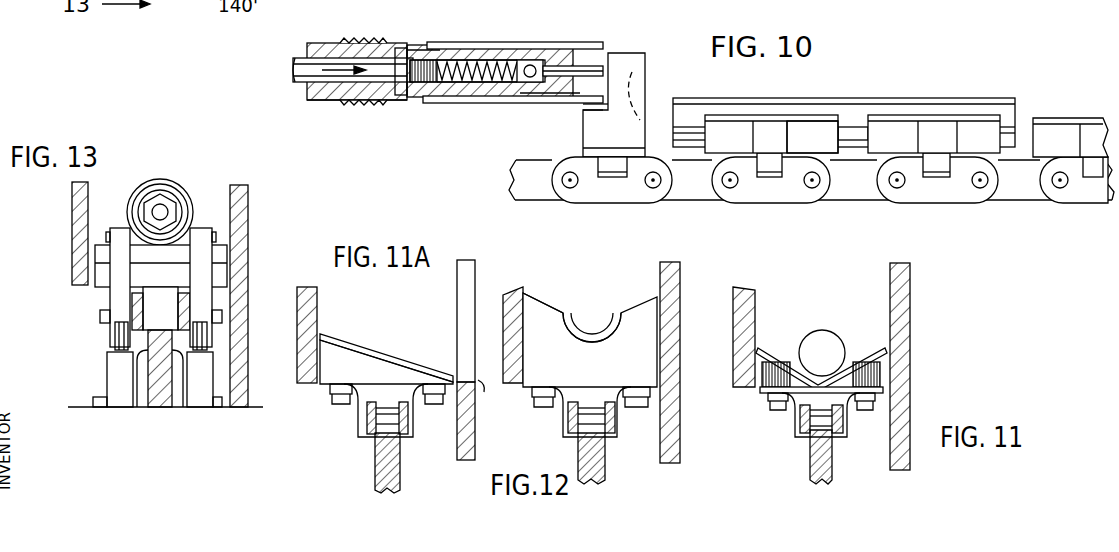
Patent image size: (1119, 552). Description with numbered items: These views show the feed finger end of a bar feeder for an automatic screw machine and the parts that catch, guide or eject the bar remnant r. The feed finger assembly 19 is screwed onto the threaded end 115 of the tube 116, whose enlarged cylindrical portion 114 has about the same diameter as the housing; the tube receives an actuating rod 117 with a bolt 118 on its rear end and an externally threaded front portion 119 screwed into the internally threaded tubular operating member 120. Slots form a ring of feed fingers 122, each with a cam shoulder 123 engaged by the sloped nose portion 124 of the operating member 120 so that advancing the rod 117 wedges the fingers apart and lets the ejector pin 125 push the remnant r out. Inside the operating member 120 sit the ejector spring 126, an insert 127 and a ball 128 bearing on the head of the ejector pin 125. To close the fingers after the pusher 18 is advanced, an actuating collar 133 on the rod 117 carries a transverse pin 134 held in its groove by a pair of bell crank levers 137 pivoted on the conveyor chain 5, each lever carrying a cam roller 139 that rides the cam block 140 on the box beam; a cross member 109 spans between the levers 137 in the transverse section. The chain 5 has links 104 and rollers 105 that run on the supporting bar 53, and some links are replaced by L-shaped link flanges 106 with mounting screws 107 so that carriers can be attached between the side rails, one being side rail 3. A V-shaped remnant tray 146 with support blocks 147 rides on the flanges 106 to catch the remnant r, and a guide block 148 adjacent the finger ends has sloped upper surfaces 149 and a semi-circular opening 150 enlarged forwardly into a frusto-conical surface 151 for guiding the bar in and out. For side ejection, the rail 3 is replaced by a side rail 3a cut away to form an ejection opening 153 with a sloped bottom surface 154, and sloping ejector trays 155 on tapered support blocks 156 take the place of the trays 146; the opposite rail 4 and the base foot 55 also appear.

In FIG. 13, the side rail 3 is at (247, 212).
In FIG. 12, the side rail 3 is at (675, 331).
In FIG. 11, the side rail 3 is at (905, 297).
In FIG. 11A, the side rail 3a is at (476, 437).
In FIG. 11A, the opposite wall 4 is at (318, 302).
In FIG. 12, the opposite wall 4 is at (505, 290).
In FIG. 11, the opposite wall 4 is at (740, 312).
In FIG. 10, the conveyor chain 5 is at (679, 200).
In FIG. 13, the conveyor chain 5 is at (166, 328).
In FIG. 11A, the conveyor chain 5 is at (420, 428).
In FIG. 12, the conveyor chain 5 is at (622, 428).
In FIG. 11, the conveyor chain 5 is at (772, 422).
In FIG. 10, the pusher 18 is at (320, 101).
In FIG. 13, the pusher 18 is at (185, 192).
In FIG. 10, the feed finger assembly 19 is at (580, 30).
In FIG. 13, the supporting bar 53 is at (162, 396).
In FIG. 11A, the supporting bar 53 is at (392, 470).
In FIG. 12, the supporting bar 53 is at (600, 470).
In FIG. 11, the supporting bar 53 is at (835, 478).
In FIG. 13, the base foot 55 is at (98, 397).
In FIG. 10, the links 104 is at (522, 192).
In FIG. 11, the rollers 105 is at (818, 428).
In FIG. 10, the link flanges 106 is at (762, 192).
In FIG. 11A, the link flanges 106 is at (360, 420).
In FIG. 12, the link flanges 106 is at (550, 386).
In FIG. 11, the link flanges 106 is at (852, 428).
In FIG. 10, the mounting screws 107 is at (606, 165).
In FIG. 12, the mounting screws 107 is at (591, 397).
In FIG. 11, the mounting screws 107 is at (770, 404).
In FIG. 13, the cross member 109 is at (225, 272).
In FIG. 10, the enlarged cylindrical portion 114 is at (397, 101).
In FIG. 10, the threaded end 115 is at (360, 42).
In FIG. 10, the tube 116 is at (323, 45).
In FIG. 10, the actuating rod 117 is at (295, 68).
In FIG. 13, the bolt 118 is at (150, 200).
In FIG. 10, the externally threaded front portion 119 is at (437, 82).
In FIG. 10, the tubular operating member 120 is at (463, 50).
In FIG. 10, the feed fingers 122 is at (536, 42).
In FIG. 10, the cam shoulder 123 is at (590, 47).
In FIG. 10, the sloped nose portion 124 is at (590, 108).
In FIG. 10, the ejector pin 125 is at (641, 58).
In FIG. 10, the ejector spring 126 is at (487, 62).
In FIG. 10, the insert 127 is at (515, 84).
In FIG. 10, the ball 128 is at (533, 61).
In FIG. 13, the actuating collar 133 is at (157, 190).
In FIG. 13, the transverse pin 134 is at (106, 232).
In FIG. 13, the bell crank levers 137 is at (116, 298).
In FIG. 13, the cam roller 139 is at (112, 348).
In FIG. 13, the cam block 140 is at (118, 400).
In FIG. 10, the remnant tray 146 is at (900, 115).
In FIG. 11, the remnant tray 146 is at (872, 350).
In FIG. 10, the support blocks 147 is at (780, 135).
In FIG. 11, the support blocks 147 is at (872, 376).
In FIG. 10, the guide block 148 is at (637, 128).
In FIG. 12, the guide block 148 is at (648, 363).
In FIG. 12, the sloped upper surfaces 149 is at (540, 300).
In FIG. 12, the semi-circular opening 150 is at (592, 333).
In FIG. 10, the frusto-conical surface 151 is at (644, 92).
In FIG. 12, the frusto-conical surface 151 is at (606, 337).
In FIG. 11A, the ejection opening 153 is at (465, 302).
In FIG. 11A, the surface 154 is at (483, 385).
In FIG. 11A, the sloping ejector tray 155 is at (341, 343).
In FIG. 11A, the tapered support block 156 is at (378, 368).
In FIG. 10, the remnant r is at (946, 100).
In FIG. 11, the remnant r is at (808, 343).